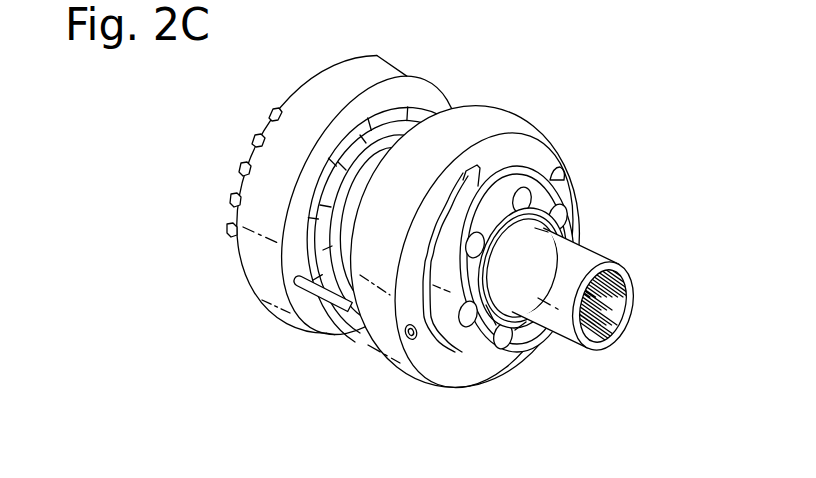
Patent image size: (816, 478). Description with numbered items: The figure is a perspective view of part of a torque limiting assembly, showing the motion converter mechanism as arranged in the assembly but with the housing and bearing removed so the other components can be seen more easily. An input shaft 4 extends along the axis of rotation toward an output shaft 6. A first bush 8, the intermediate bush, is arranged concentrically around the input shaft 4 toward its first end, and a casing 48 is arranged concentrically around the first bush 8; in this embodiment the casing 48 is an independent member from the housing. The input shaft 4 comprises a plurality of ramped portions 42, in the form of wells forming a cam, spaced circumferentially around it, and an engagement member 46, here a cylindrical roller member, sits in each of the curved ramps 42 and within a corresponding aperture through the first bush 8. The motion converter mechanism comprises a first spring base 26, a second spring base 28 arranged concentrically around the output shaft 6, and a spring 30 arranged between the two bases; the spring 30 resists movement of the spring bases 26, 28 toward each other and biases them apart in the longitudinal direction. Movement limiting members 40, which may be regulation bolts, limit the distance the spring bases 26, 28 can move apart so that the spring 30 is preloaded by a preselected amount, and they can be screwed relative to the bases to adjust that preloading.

The input shaft 4 is at (593, 252).
The output shaft 6 is at (243, 167).
The first bush 8 is at (490, 340).
The first spring base 26 is at (493, 112).
The second spring base 28 is at (290, 98).
The spring 30 is at (310, 260).
The movement limiting members 40 is at (312, 300).
The ramped portions 42 is at (560, 227).
The engagement member 46 is at (563, 212).
The casing 48 is at (513, 165).